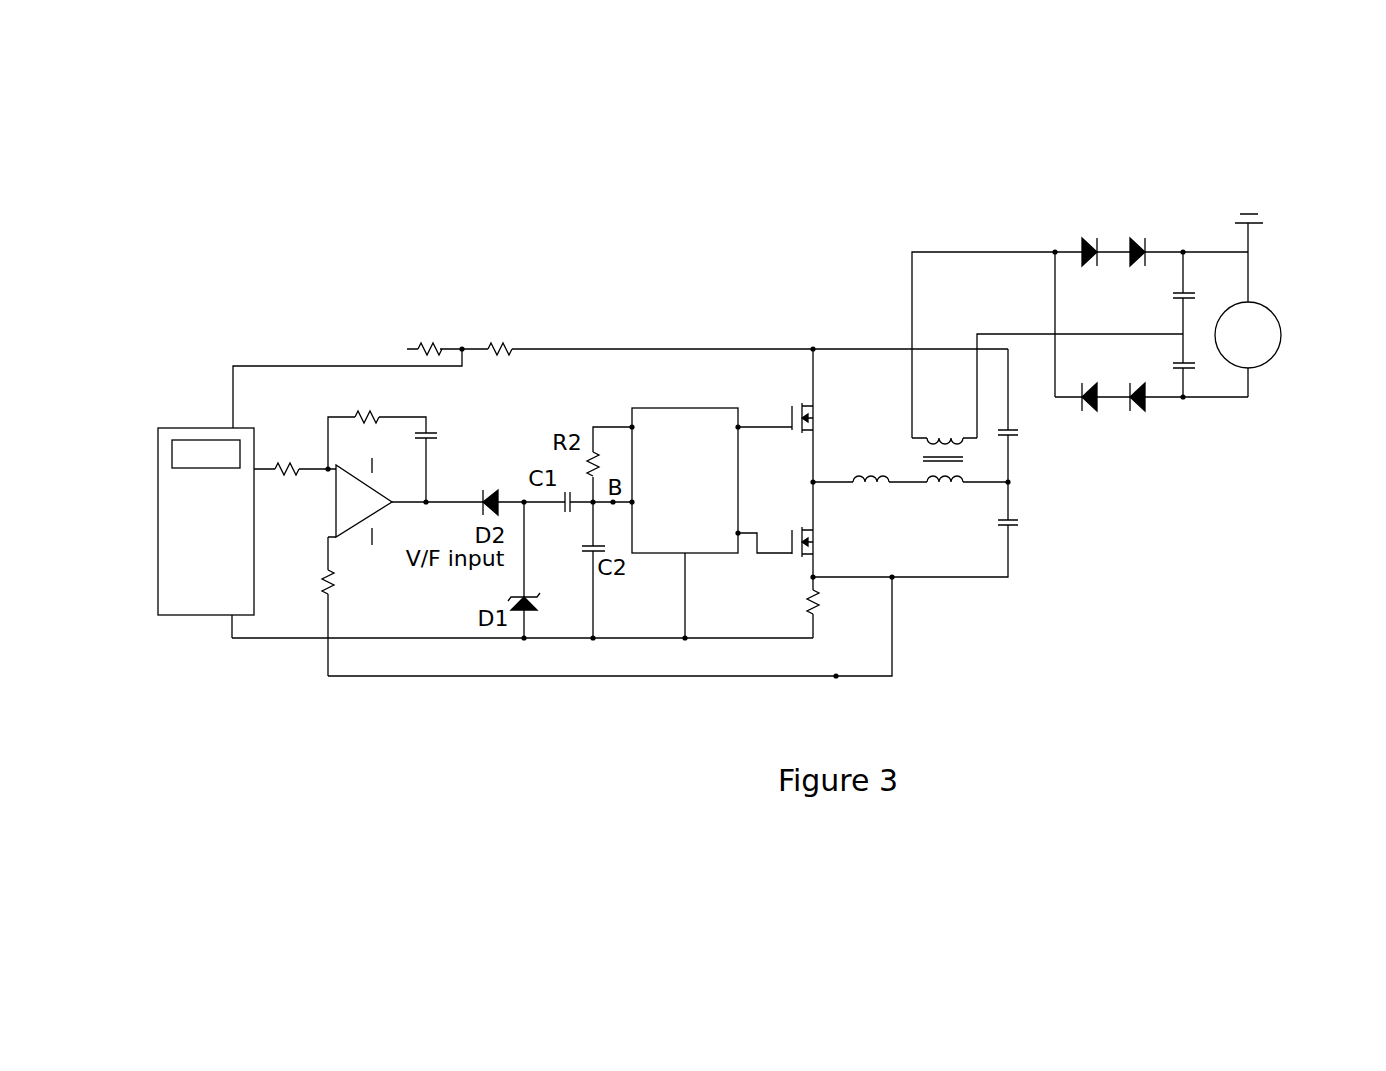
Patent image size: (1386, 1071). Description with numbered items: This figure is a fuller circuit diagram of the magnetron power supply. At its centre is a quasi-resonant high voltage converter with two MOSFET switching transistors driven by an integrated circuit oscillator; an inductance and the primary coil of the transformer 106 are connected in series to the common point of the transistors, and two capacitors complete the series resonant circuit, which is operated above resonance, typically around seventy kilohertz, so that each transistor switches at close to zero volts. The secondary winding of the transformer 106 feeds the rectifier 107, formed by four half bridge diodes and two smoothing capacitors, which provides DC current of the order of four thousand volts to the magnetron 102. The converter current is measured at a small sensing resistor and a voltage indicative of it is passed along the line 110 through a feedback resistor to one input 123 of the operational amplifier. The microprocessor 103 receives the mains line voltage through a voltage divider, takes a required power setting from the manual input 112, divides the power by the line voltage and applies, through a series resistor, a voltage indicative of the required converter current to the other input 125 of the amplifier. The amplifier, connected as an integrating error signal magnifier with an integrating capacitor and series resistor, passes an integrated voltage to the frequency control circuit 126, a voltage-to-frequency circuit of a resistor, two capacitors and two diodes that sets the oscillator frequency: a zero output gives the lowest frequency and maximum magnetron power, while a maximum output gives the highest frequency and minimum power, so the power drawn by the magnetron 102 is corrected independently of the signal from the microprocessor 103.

The magnetron 102 is at (1270, 308).
The microprocessor 103 is at (222, 580).
The transformer 106 is at (922, 530).
The rectifier 107 is at (1133, 181).
The line 110 is at (797, 268).
The desired power control value 112 is at (167, 453).
The input of the operational amplifier 123 is at (330, 535).
The other input of the operational amplifier 125 is at (331, 462).
The frequency control circuit 126 is at (610, 312).